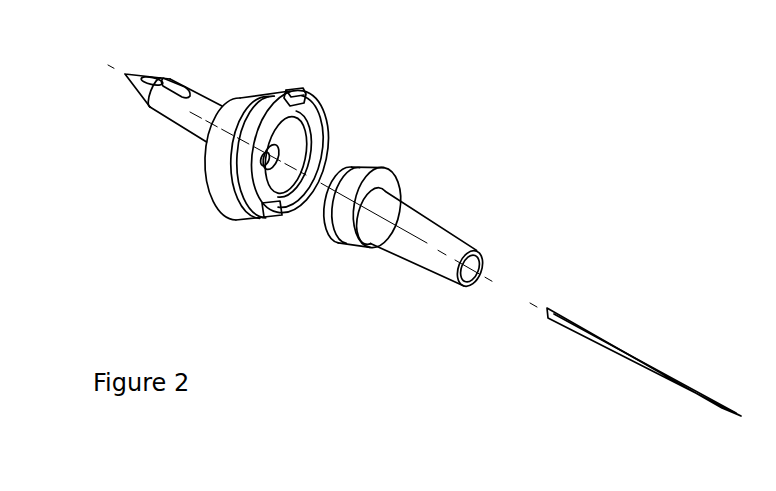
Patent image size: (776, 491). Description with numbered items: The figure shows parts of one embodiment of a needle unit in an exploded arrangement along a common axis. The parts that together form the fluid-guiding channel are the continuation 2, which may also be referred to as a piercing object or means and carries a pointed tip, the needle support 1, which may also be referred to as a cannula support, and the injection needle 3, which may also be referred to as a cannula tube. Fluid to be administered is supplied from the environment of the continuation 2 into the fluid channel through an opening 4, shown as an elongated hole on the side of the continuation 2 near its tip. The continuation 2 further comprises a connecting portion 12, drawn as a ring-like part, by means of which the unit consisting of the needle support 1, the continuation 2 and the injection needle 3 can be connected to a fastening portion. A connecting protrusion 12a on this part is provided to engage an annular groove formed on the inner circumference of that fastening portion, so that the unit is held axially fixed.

The needle support 1 is at (437, 192).
The continuation 2 is at (226, 78).
The injection needle 3 is at (623, 350).
The opening 4 is at (175, 87).
The connecting portion 12 is at (255, 90).
The connecting protrusion 12a is at (300, 88).